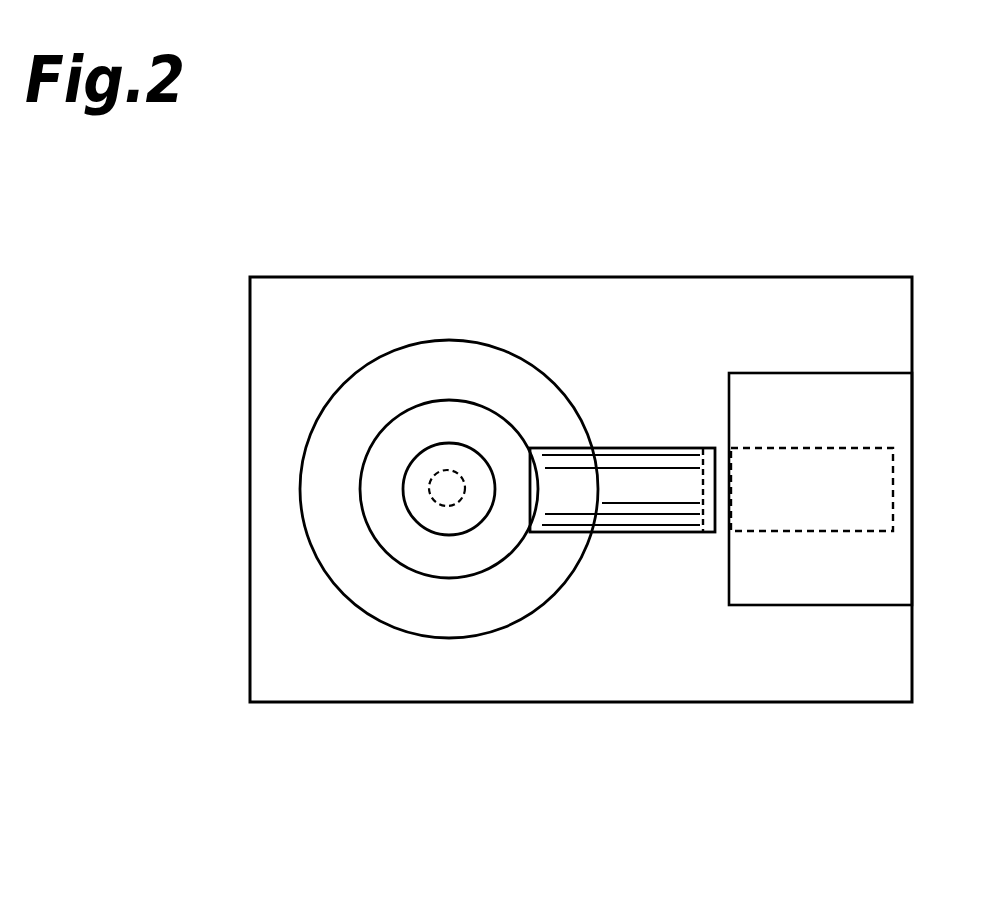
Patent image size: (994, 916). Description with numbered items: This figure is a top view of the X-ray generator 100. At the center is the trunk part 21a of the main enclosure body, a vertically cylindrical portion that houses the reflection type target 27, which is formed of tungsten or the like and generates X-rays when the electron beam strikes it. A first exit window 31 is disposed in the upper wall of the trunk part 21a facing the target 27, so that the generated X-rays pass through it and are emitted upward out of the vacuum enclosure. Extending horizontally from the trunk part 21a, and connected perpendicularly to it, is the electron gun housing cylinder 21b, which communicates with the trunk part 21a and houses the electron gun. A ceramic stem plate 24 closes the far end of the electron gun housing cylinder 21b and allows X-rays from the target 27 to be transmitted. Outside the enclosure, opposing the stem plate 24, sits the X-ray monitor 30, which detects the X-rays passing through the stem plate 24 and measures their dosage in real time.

The X-ray generator 100 is at (837, 781).
The trunk part 21a is at (503, 562).
The electron gun housing cylinder 21b is at (625, 448).
The stem plate 24 is at (702, 487).
The reflection type target 27 is at (462, 496).
The X-ray monitor 30 is at (838, 447).
The first exit window 31 is at (453, 455).